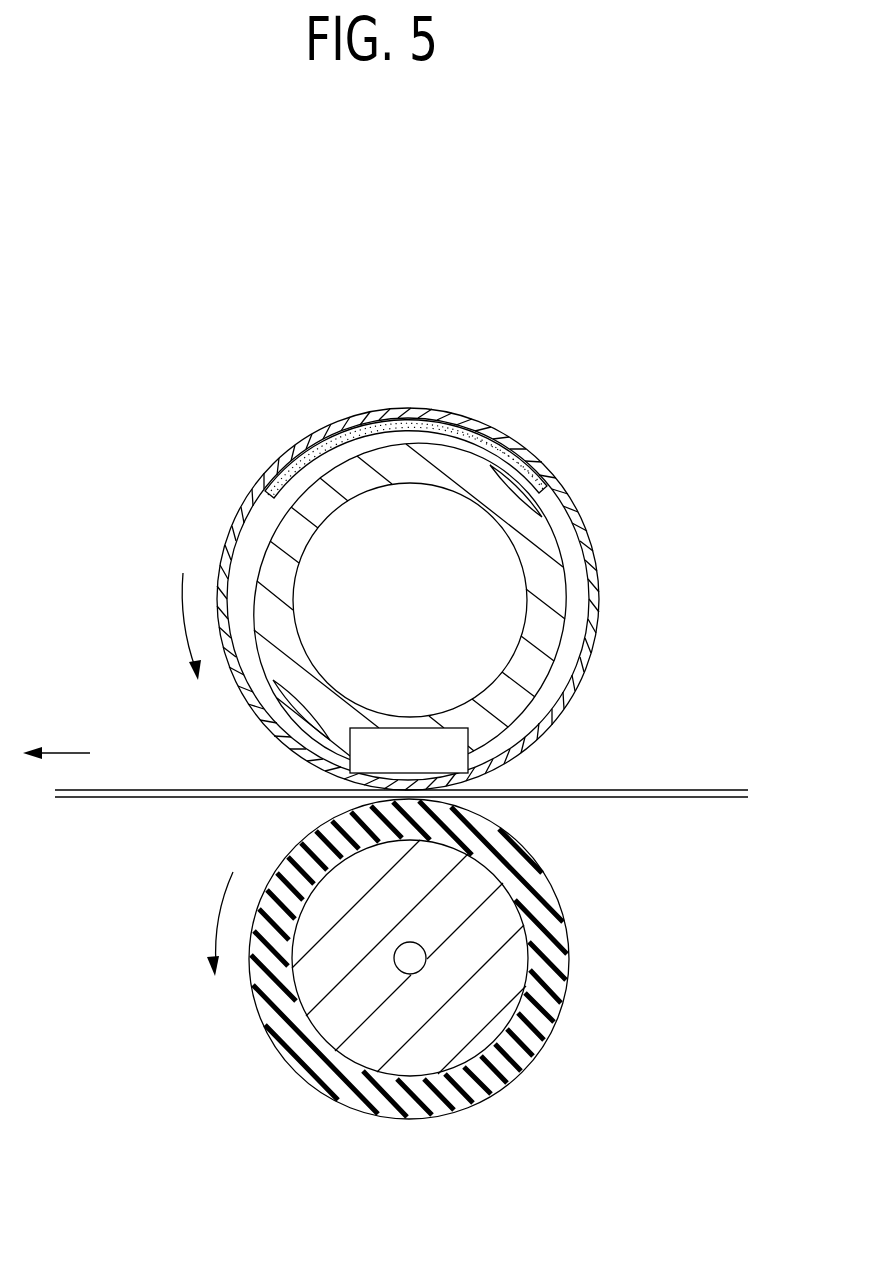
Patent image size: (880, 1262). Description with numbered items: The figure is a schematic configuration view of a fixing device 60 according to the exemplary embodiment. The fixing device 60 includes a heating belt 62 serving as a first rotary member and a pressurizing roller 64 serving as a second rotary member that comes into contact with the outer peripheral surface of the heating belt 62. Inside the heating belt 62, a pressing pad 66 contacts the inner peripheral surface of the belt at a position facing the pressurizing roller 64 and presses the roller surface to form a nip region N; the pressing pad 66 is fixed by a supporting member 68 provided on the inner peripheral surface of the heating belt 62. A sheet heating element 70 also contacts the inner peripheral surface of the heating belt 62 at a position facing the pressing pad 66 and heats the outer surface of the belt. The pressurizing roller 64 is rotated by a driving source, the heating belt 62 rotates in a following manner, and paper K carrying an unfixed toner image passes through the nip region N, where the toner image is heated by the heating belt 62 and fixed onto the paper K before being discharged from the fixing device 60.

The fixing device 60 is at (606, 296).
The heating belt 62 is at (603, 620).
The pressurizing roller 64 is at (570, 933).
The pressing pad 66 is at (403, 748).
The supporting member 68 is at (548, 573).
The sheet heating element 70 is at (494, 466).
The paper K is at (689, 789).
The nip region N is at (513, 775).